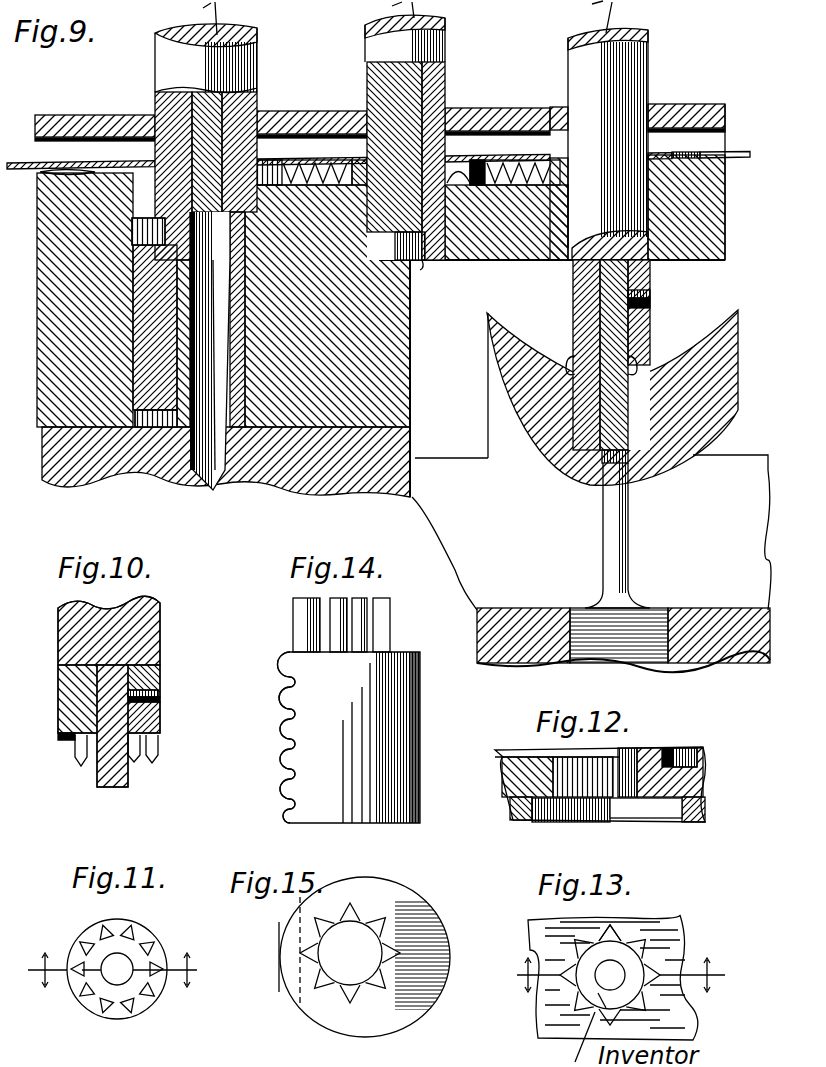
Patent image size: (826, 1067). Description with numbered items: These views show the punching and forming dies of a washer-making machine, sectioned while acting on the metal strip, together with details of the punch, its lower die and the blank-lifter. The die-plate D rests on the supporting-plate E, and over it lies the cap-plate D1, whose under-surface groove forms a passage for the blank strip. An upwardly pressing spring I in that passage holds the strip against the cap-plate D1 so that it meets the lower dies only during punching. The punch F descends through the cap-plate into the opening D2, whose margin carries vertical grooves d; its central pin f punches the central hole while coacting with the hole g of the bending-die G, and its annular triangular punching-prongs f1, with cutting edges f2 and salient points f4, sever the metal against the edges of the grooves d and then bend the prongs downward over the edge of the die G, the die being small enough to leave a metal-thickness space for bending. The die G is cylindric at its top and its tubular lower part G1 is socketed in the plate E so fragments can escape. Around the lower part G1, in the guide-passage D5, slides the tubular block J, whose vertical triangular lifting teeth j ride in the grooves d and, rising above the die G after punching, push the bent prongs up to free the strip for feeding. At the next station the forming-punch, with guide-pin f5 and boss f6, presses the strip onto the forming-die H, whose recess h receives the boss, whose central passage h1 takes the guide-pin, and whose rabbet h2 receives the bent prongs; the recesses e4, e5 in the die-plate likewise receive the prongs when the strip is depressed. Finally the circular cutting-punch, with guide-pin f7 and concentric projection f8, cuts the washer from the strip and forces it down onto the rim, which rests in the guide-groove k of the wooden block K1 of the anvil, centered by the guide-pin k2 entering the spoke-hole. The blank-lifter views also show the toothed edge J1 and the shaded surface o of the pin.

In FIG. 9, the die-plate D is at (388, 358).
In FIG. 12, the die-plate D is at (695, 783).
In FIG. 13, the die-plate D is at (547, 952).
In FIG. 9, the cap-plate D1 is at (90, 116).
In FIG. 12, the opening in die-plate D2 is at (622, 776).
In FIG. 13, the opening in die-plate D2 is at (598, 993).
In FIG. 9, the guide-passage D5 is at (165, 426).
In FIG. 12, the guide-passage D5 is at (665, 811).
In FIG. 9, the supporting-plate E is at (365, 477).
In FIG. 10, the punch F is at (160, 629).
In FIG. 11, the punch F is at (86, 942).
In FIG. 9, the central pin f is at (205, 232).
In FIG. 10, the central pin f is at (104, 787).
In FIG. 11, the central pin f is at (118, 967).
In FIG. 10, the punching-prongs f1 is at (155, 749).
In FIG. 11, the punching-prongs f1 is at (162, 985).
In FIG. 10, the cutting edges f2 is at (75, 762).
In FIG. 10, the salient points f4 is at (80, 766).
In FIG. 9, the guide-pin f5 is at (420, 263).
In FIG. 9, the boss f6 is at (458, 171).
In FIG. 9, the guide-pin of cutting-punch f7 is at (600, 330).
In FIG. 9, the concentric projection f8 is at (646, 350).
In FIG. 9, the bending-die G is at (274, 114).
In FIG. 13, the bending-die G is at (645, 1000).
In FIG. 9, the lower part of die G1 is at (214, 491).
In FIG. 13, the central hole g is at (610, 975).
In FIG. 9, the forming-die H is at (450, 178).
In FIG. 9, the recess h is at (430, 160).
In FIG. 9, the central passage h1 is at (436, 262).
In FIG. 9, the groove or rabbet h2 is at (357, 162).
In FIG. 9, the spring I is at (60, 171).
In FIG. 9, the tubular block J is at (257, 392).
In FIG. 14, the tubular block J is at (343, 722).
In FIG. 15, the tubular block J is at (418, 912).
In FIG. 14, the toothed edge J1 is at (283, 716).
In FIG. 15, the toothed edge J1 is at (285, 980).
In FIG. 14, the lifting prongs or teeth j is at (399, 622).
In FIG. 15, the lifting prongs or teeth j is at (368, 990).
In FIG. 9, the wooden block K1 is at (591, 563).
In FIG. 9, the guide-groove k is at (671, 467).
In FIG. 9, the guide-pin k2 is at (630, 525).
In FIG. 9, the recess e4 is at (296, 162).
In FIG. 9, the recess e5 is at (540, 162).
In FIG. 9, the pin face o is at (215, 365).
In FIG. 13, the grooves d is at (623, 948).